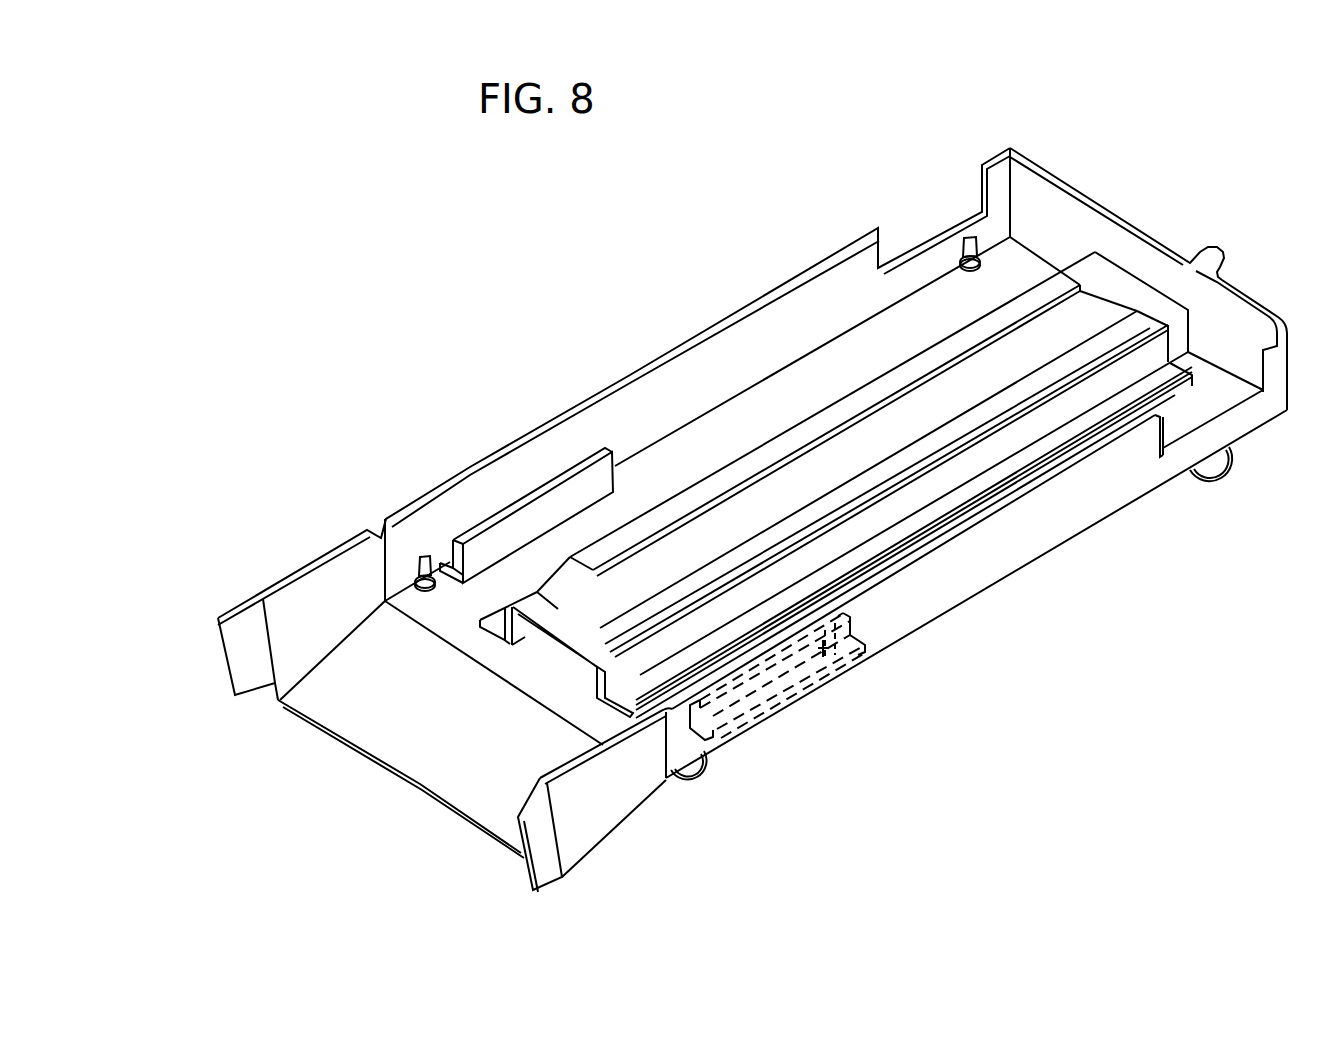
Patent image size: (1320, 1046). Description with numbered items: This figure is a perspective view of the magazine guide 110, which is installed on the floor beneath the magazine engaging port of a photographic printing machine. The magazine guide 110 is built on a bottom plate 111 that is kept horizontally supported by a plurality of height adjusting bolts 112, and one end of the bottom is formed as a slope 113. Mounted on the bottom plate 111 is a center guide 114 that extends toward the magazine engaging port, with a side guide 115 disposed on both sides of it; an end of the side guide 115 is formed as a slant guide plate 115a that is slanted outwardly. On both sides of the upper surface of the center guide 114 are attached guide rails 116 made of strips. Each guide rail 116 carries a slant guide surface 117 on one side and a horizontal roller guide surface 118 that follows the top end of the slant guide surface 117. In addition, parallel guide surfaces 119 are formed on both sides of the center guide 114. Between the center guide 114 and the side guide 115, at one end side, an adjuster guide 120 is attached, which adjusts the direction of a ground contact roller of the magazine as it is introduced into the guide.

The magazine guide 110 is at (583, 377).
The bottom plate 111 is at (788, 400).
The height adjusting bolt 112 is at (425, 556).
The slope 113 is at (438, 773).
The center guide 114 is at (1120, 297).
The side guide 115 is at (833, 287).
The slant guide plate 115a is at (248, 647).
The guide rail 116 is at (795, 530).
The slant guide surface 117 is at (597, 675).
The horizontal roller guide surface 118 is at (998, 410).
The parallel guide surface 119 is at (913, 500).
The adjuster guide 120 is at (558, 507).